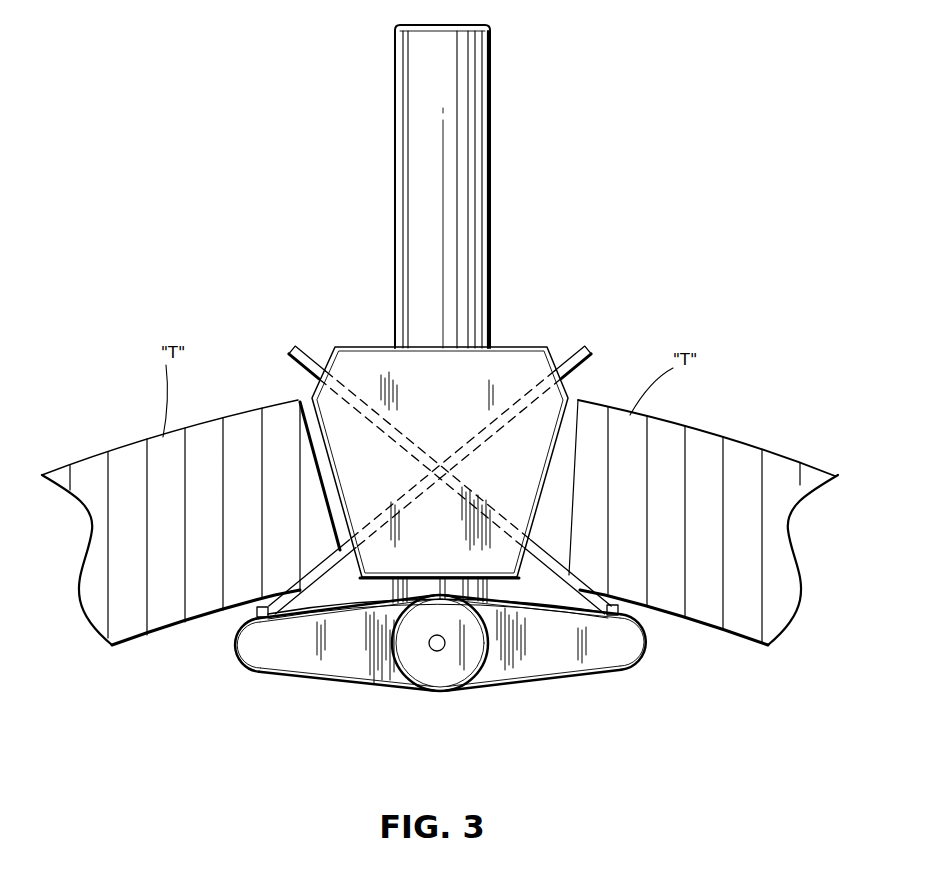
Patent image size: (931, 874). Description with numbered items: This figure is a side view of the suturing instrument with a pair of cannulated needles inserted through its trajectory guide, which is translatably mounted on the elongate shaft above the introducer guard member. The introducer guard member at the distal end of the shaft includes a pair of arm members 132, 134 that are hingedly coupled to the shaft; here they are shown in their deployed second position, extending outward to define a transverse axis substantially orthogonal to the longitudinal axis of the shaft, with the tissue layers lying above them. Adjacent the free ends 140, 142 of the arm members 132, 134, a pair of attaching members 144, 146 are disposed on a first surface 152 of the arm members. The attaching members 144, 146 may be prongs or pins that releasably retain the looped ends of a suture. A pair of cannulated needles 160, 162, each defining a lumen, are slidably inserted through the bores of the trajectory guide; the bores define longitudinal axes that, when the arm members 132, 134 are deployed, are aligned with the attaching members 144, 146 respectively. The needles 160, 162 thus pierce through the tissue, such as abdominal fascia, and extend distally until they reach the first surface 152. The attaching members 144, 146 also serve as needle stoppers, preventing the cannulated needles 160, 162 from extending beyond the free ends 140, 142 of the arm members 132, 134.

The arm member 132 is at (372, 691).
The arm member 134 is at (507, 677).
The free end 140 is at (250, 643).
The free end 142 is at (615, 648).
The attaching member 144 is at (250, 622).
The attaching member 146 is at (627, 617).
The first surface 152 is at (493, 603).
The cannulated needle 160 is at (574, 352).
The cannulated needle 162 is at (308, 356).